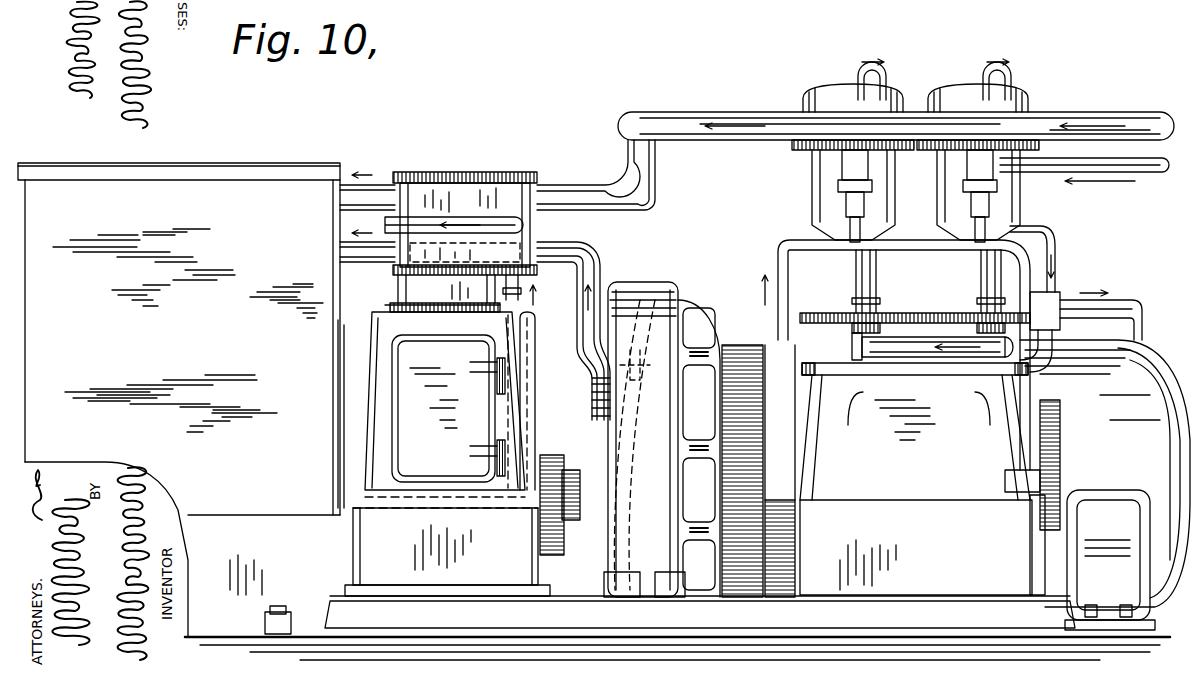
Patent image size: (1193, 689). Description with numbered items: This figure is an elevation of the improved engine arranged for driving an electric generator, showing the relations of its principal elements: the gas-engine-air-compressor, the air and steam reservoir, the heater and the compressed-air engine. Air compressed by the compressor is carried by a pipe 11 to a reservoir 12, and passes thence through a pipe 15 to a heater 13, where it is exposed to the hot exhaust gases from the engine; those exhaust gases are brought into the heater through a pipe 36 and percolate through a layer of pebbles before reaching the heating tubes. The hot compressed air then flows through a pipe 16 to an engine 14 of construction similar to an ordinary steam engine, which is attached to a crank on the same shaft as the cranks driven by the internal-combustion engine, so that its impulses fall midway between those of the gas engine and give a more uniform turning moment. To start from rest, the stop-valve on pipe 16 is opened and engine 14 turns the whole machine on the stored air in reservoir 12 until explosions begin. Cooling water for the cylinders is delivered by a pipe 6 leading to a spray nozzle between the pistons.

The pipe 6 is at (884, 82).
The pipe 11 is at (1112, 302).
The reservoir 12 is at (1097, 485).
The heater 13 is at (182, 183).
The engine 14 is at (433, 192).
The pipe 15 is at (555, 250).
The pipe 16 is at (459, 450).
The pipe 36 is at (855, 170).